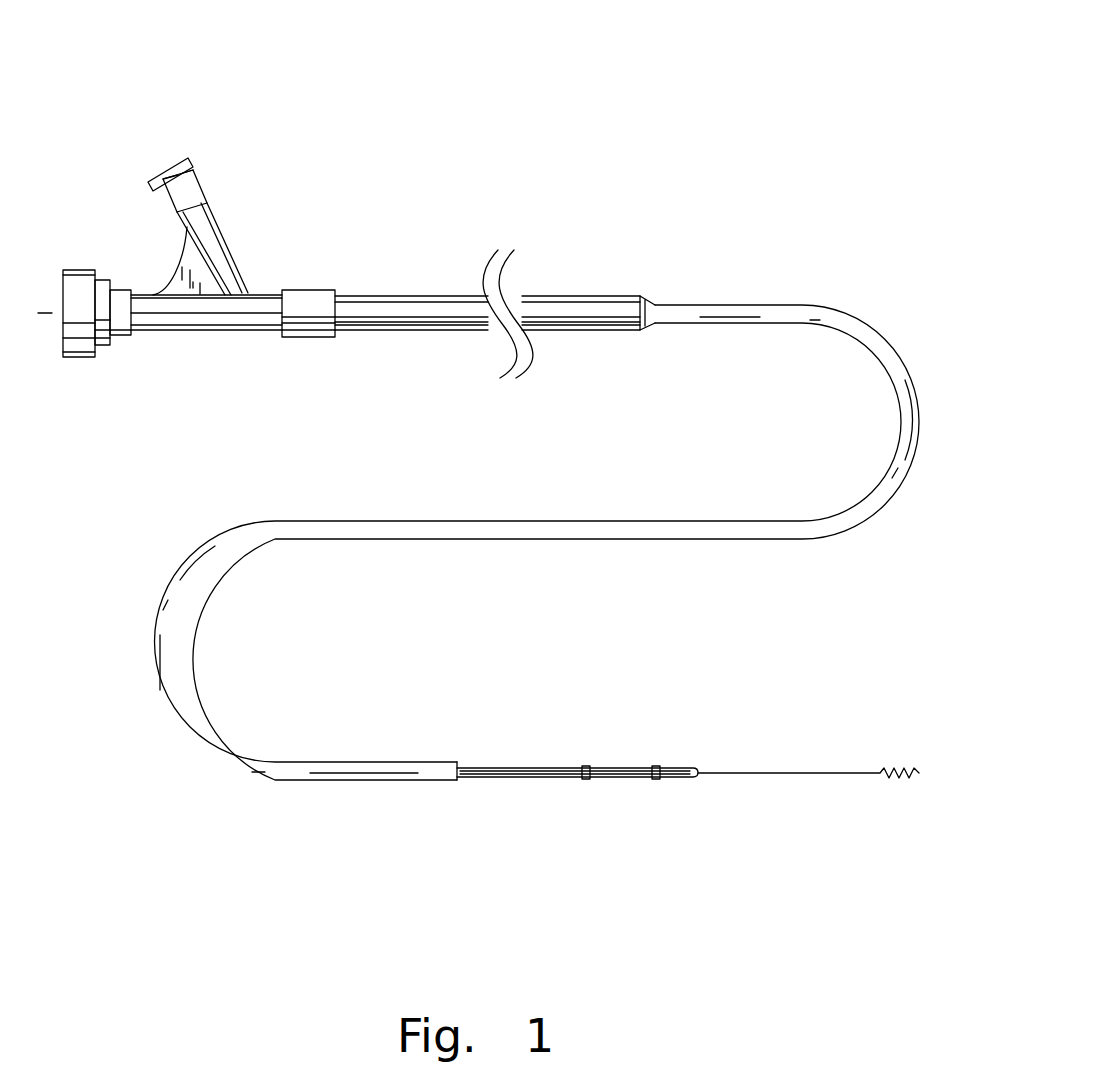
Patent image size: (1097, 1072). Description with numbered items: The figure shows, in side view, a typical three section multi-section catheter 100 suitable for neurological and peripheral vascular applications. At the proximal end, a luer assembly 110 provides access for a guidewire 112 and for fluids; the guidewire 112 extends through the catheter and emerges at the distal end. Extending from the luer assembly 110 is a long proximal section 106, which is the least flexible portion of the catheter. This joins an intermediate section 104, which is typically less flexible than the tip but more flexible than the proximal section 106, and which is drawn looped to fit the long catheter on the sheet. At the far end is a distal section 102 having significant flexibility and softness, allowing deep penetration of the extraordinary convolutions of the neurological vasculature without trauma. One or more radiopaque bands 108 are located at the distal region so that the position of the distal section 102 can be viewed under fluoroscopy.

The multi-section catheter 100 is at (762, 127).
The distal section 102 is at (698, 803).
The intermediate section 104 is at (410, 520).
The proximal section 106 is at (648, 243).
The radiopaque bands 108 is at (658, 763).
The luer assembly 110 is at (183, 332).
The guidewire 112 is at (52, 313).